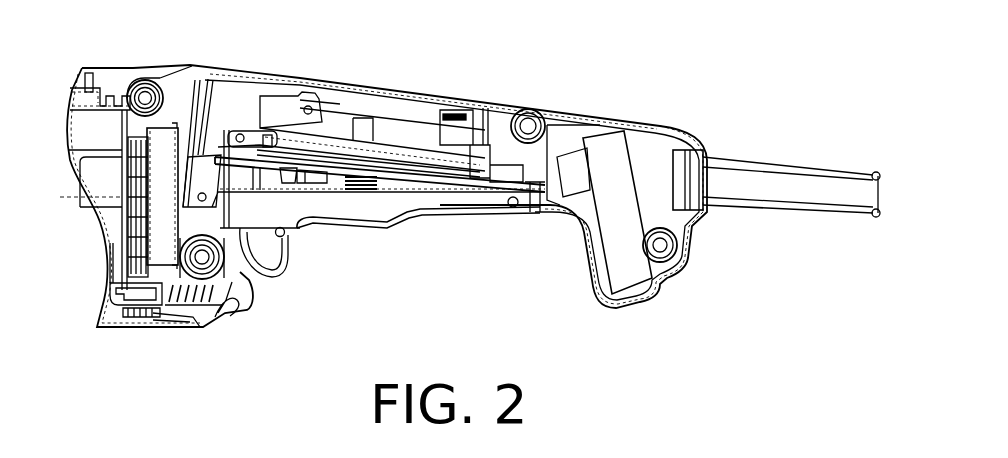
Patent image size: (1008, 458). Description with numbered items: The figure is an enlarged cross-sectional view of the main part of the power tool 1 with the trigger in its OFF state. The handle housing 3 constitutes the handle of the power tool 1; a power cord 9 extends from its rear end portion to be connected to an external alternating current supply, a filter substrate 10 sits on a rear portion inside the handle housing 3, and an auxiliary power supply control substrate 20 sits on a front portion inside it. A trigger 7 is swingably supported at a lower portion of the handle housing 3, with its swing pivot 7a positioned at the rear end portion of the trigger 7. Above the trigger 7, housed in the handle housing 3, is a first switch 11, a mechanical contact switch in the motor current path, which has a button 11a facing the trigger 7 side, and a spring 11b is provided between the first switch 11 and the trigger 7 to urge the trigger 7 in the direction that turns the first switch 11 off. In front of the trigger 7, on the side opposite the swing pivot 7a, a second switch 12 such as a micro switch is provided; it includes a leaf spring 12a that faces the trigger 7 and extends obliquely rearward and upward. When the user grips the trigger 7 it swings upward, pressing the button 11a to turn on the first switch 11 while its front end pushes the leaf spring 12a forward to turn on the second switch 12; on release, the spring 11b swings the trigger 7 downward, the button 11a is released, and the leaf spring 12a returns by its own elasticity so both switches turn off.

The power tool 1 is at (783, 380).
The handle housing 3 is at (457, 92).
The trigger 7 is at (343, 207).
The swing pivot 7a is at (517, 217).
The power cord 9 is at (782, 182).
The filter substrate 10 is at (610, 152).
The first switch 11 is at (318, 143).
The button 11a is at (300, 143).
The spring 11b is at (397, 170).
The second switch 12 is at (202, 120).
The leaf spring 12a is at (260, 173).
The auxiliary power supply control substrate 20 is at (162, 140).